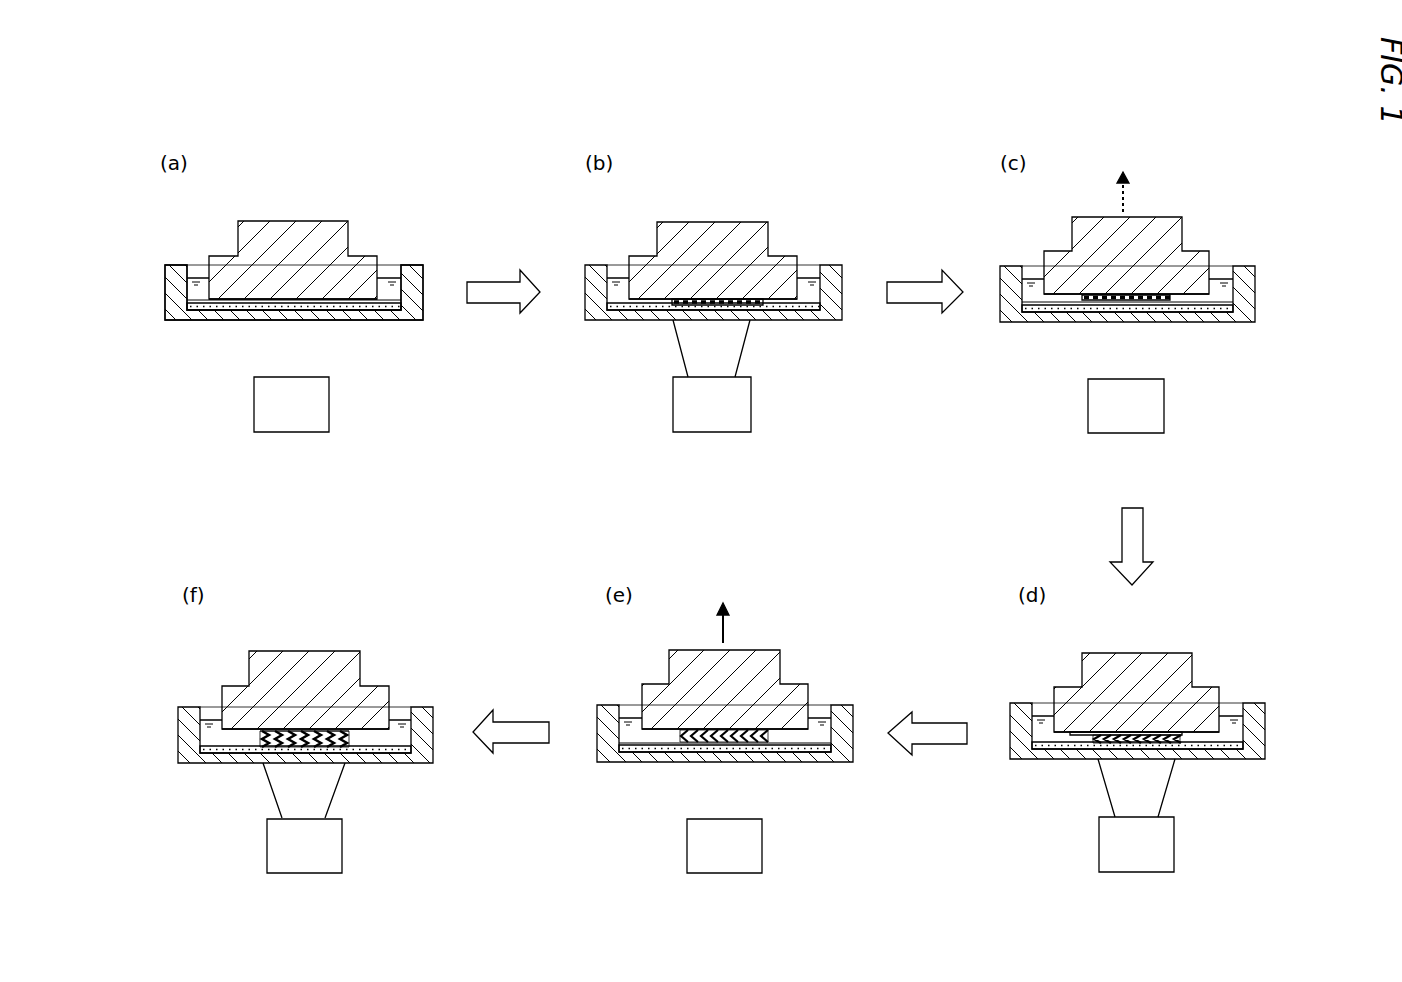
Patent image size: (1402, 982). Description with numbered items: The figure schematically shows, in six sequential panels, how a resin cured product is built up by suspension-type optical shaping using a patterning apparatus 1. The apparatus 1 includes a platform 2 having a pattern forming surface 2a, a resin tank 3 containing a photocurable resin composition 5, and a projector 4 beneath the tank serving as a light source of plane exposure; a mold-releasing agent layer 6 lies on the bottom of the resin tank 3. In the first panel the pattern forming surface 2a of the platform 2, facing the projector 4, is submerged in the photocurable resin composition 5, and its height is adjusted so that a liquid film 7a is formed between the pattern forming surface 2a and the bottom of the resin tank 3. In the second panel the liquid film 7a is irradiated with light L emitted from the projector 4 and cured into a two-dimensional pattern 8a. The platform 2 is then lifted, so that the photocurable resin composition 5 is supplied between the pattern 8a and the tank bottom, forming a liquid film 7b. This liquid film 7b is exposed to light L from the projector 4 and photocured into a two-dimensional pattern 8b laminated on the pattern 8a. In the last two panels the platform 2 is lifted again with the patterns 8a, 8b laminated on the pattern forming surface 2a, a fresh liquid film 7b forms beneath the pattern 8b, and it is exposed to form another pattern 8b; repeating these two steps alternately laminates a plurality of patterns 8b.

The patterning apparatus 1 is at (440, 201).
The platform 2 is at (338, 668).
The pattern forming surface 2a is at (230, 737).
The resin tank 3 is at (183, 720).
The projector 4 is at (337, 843).
The photocurable resin composition 5 is at (405, 730).
The mold-releasing agent layer 6 is at (400, 748).
The liquid film a 7a is at (285, 300).
The liquid film b 7b is at (717, 745).
The two-dimensional pattern a 8a is at (277, 733).
The two-dimensional pattern b 8b is at (342, 752).
The light L is at (282, 787).